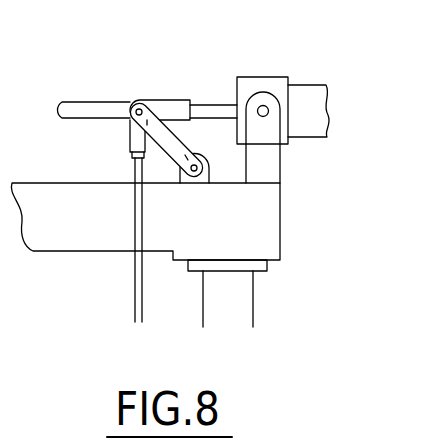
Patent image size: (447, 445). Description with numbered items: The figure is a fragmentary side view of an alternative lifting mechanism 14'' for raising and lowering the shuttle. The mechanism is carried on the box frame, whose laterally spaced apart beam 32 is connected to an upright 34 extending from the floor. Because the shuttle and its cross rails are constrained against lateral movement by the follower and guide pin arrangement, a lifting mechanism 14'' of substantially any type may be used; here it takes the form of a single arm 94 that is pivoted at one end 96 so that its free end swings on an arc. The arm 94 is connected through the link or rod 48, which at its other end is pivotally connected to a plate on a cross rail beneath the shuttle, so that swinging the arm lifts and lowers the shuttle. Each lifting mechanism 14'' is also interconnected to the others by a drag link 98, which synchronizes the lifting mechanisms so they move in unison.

The lifting mechanism 14'' is at (176, 90).
The beam 32 is at (274, 213).
The upright 34 is at (247, 300).
The link or rod 48 is at (133, 292).
The single arm 94 is at (170, 152).
The pivoted end 96 is at (203, 165).
The drag link 98 is at (82, 108).